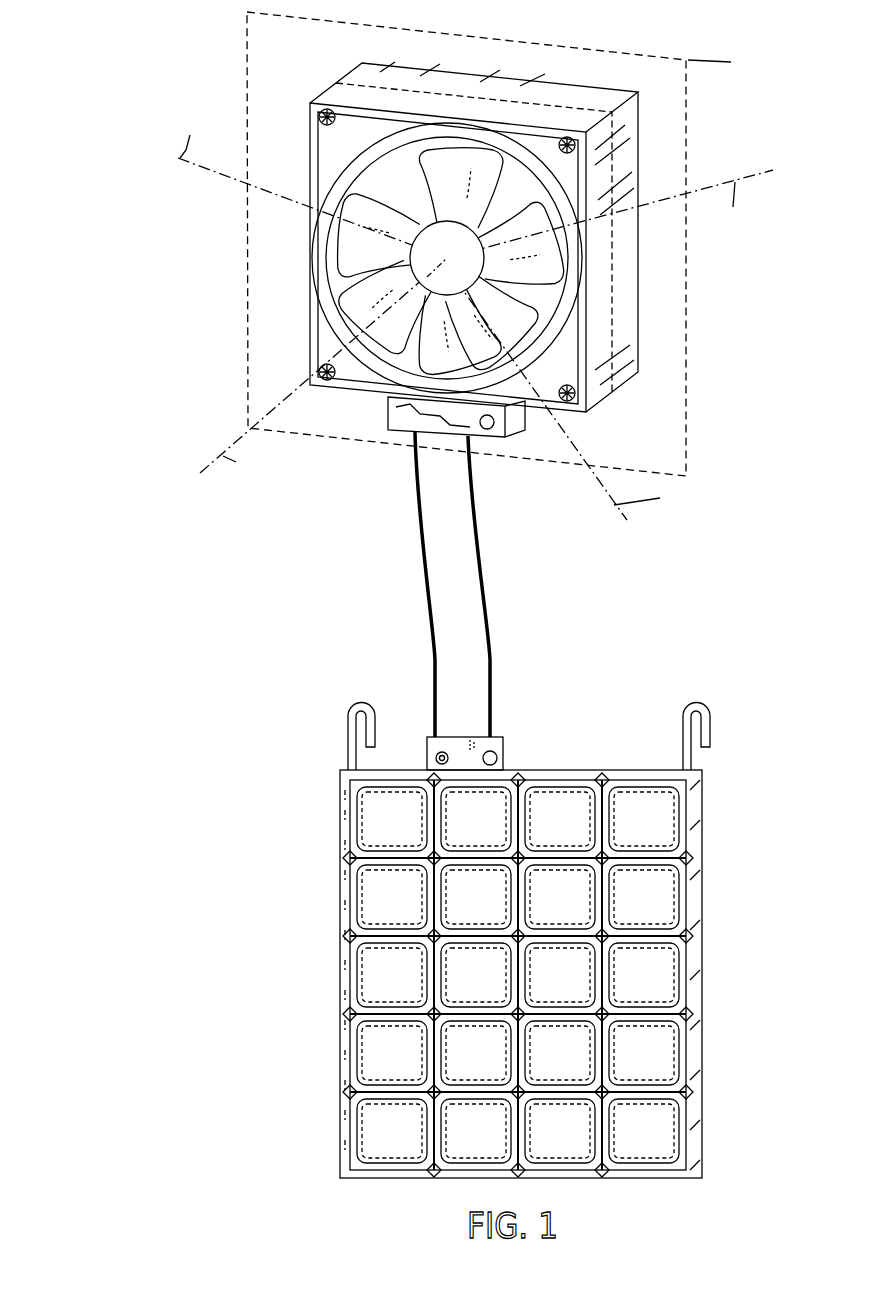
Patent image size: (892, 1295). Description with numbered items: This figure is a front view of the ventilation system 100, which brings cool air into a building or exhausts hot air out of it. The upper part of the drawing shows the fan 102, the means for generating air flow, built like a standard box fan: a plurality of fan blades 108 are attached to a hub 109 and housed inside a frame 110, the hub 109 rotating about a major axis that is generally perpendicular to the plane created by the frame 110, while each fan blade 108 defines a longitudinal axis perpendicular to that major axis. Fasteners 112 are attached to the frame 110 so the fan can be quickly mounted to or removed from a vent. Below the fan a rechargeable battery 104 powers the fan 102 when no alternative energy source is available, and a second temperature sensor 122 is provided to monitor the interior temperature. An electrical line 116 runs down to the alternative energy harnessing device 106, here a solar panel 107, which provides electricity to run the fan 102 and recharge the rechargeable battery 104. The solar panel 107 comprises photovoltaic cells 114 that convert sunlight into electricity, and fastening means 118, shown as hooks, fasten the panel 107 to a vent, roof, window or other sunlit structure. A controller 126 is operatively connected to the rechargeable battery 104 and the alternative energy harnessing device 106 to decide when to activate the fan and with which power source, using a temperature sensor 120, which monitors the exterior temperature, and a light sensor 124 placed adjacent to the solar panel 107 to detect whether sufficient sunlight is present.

The ventilation system 100 is at (155, 83).
The fan 102 is at (326, 74).
The rechargeable battery 104 is at (388, 405).
The alternative energy harnessing device 106 is at (327, 946).
The solar panel 107 is at (705, 975).
The fan blade 108 is at (365, 222).
The hub 109 is at (467, 270).
The frame 110 is at (623, 155).
The fastener 112 is at (590, 408).
The photovoltaic cell 114 is at (368, 1128).
The electrical line 116 is at (418, 543).
The fastening means 118 is at (348, 735).
The temperature sensor 120 is at (530, 748).
The second temperature sensor 122 is at (487, 430).
The light sensor 124 is at (433, 758).
The controller 126 is at (478, 737).